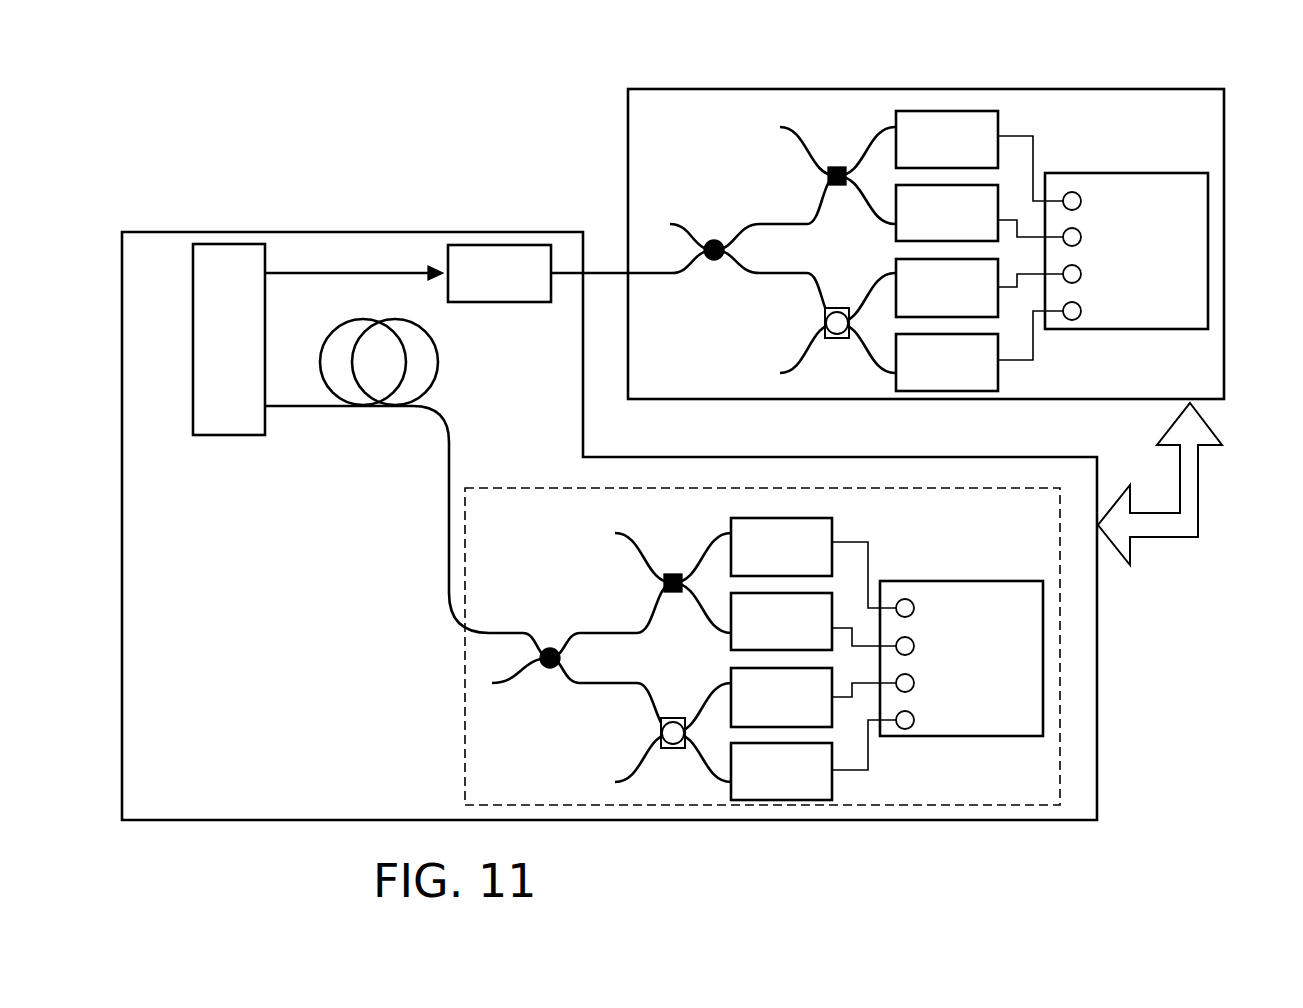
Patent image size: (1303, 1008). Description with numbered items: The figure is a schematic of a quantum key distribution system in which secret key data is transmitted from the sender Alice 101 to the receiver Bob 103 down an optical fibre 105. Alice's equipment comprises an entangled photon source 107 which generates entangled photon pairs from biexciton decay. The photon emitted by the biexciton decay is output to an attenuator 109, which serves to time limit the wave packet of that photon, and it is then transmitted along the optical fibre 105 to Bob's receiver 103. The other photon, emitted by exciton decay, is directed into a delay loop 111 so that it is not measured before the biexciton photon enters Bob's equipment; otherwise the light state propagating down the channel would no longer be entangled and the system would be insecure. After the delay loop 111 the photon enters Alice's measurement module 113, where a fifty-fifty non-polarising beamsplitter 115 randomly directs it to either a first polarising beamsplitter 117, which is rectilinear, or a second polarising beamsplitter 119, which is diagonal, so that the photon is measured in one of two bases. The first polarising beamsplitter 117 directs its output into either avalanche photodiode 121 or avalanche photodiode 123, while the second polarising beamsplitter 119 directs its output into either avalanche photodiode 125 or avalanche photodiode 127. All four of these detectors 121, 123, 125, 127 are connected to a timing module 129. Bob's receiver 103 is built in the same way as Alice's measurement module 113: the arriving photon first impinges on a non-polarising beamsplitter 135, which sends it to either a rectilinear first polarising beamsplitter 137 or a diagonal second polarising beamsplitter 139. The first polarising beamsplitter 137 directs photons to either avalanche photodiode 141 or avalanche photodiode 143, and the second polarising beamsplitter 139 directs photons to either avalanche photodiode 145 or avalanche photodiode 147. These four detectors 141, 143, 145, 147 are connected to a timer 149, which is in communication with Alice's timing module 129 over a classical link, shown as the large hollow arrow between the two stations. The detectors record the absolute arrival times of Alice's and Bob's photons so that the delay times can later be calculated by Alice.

The sender (Alice) 101 is at (355, 230).
The receiver (Bob) 103 is at (1235, 378).
The optical fibre 105 is at (603, 270).
The entangled photon source 107 is at (227, 242).
The attenuator 109 is at (497, 243).
The delay loop 111 is at (380, 417).
The measurement module 113 is at (657, 824).
The non-polarising beamsplitter 115 is at (554, 687).
The first polarising beamsplitter 117 is at (669, 539).
The second polarising beamsplitter 119 is at (683, 785).
The avalanche photodiode (APD) 121 is at (835, 508).
The APD 123 is at (837, 597).
The APD 125 is at (838, 715).
The APD 127 is at (804, 809).
The timing module 129 is at (1022, 693).
The non-polarising beamsplitter 135 is at (711, 223).
The first polarising beamsplitter 137 is at (840, 115).
The second polarising beamsplitter 139 is at (838, 356).
The APD 141 is at (955, 109).
The APD 143 is at (1004, 181).
The APD 145 is at (1001, 305).
The APD 147 is at (964, 399).
The timer 149 is at (1189, 194).